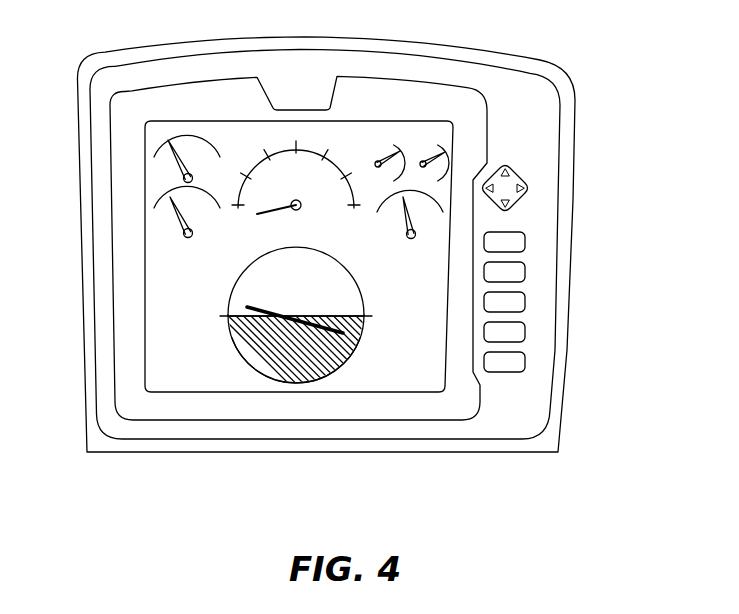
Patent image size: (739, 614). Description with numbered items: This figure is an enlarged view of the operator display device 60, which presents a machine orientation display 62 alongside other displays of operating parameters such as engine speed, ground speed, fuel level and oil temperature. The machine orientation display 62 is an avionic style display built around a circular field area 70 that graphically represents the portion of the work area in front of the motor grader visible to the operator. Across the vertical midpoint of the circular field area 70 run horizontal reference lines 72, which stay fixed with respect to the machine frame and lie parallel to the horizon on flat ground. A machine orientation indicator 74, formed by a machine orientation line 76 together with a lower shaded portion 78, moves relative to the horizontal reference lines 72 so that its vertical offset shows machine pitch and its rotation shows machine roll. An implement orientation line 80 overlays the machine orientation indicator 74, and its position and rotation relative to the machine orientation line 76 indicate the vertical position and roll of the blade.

The operator display device 60 is at (143, 103).
The machine orientation display 62 is at (257, 373).
The circular field area 70 is at (352, 278).
The horizontal reference lines 72 is at (228, 316).
The machine orientation indicator 74 is at (349, 366).
The machine orientation line 76 is at (335, 317).
The lower shaded portion 78 is at (312, 368).
The implement orientation line 80 is at (258, 305).